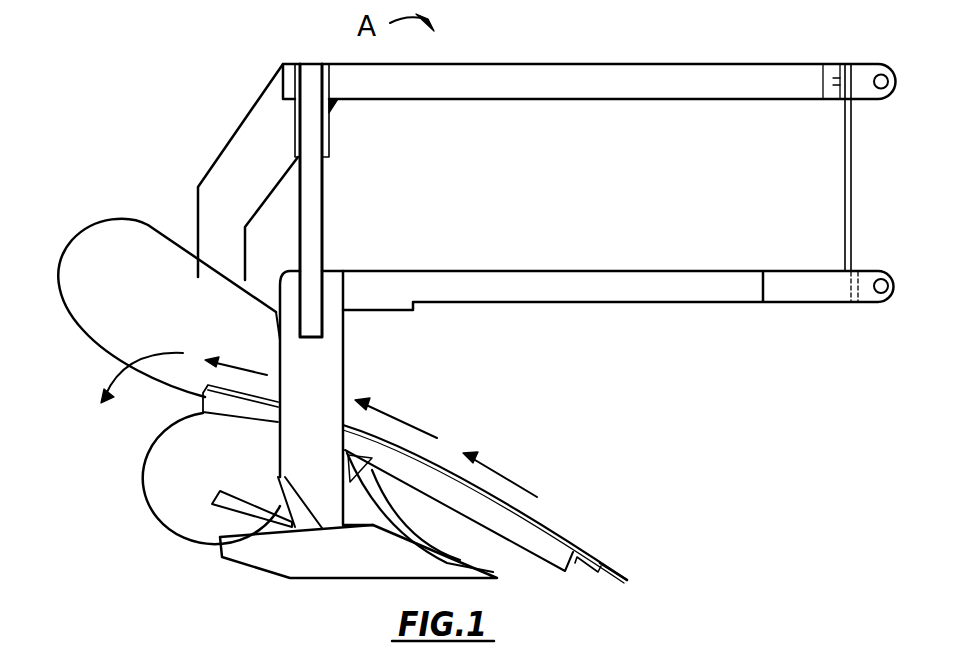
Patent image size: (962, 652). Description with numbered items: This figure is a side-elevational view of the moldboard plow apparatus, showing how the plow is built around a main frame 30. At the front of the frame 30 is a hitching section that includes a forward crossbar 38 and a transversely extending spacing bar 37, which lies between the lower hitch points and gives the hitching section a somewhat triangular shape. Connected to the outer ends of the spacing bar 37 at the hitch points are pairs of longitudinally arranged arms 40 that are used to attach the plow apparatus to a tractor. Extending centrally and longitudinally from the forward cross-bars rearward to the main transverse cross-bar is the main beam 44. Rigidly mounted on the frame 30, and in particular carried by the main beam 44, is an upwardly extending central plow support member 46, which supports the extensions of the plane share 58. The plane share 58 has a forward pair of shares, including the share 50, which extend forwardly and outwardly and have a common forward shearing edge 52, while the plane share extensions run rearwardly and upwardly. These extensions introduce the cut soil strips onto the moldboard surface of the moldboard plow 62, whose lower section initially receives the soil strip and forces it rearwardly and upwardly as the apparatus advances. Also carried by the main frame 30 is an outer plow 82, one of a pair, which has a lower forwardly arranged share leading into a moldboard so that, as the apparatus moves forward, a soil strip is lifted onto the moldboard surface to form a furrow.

The main frame 30 is at (313, 63).
The spacing bar 37 is at (867, 274).
The forward crossbar 38 is at (853, 190).
The longitudinally arranged arms 40 is at (867, 73).
The main beam 44 is at (655, 76).
The central plow support member 46 is at (223, 149).
The share 50 is at (603, 560).
The forward shearing edge 52 is at (627, 580).
The plane share 58 is at (543, 528).
The moldboard plow 62 is at (100, 224).
The outer plow 82 is at (143, 478).